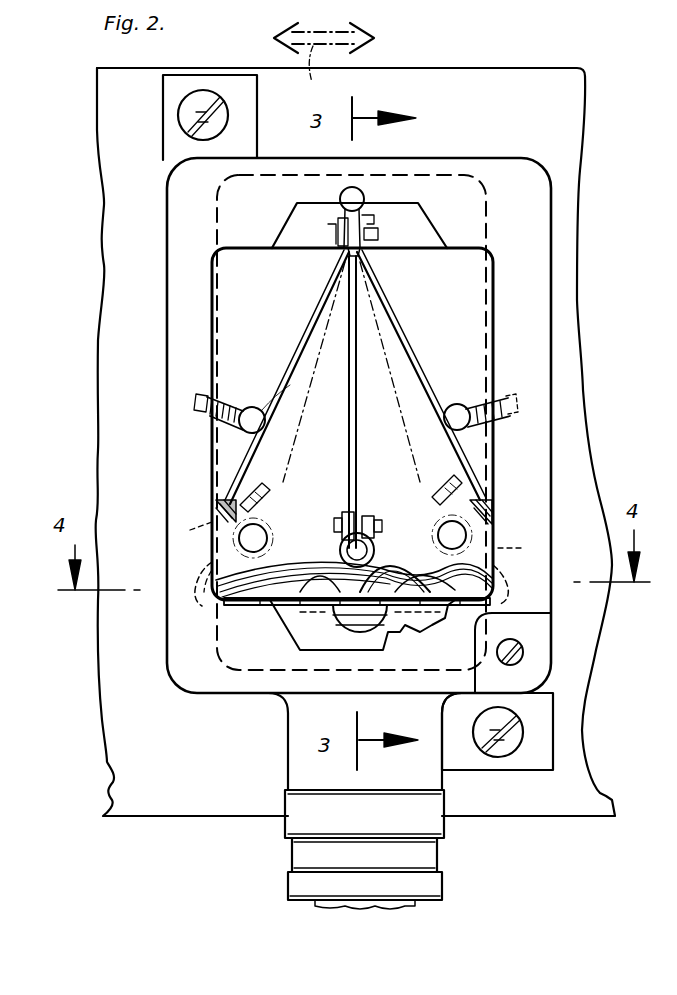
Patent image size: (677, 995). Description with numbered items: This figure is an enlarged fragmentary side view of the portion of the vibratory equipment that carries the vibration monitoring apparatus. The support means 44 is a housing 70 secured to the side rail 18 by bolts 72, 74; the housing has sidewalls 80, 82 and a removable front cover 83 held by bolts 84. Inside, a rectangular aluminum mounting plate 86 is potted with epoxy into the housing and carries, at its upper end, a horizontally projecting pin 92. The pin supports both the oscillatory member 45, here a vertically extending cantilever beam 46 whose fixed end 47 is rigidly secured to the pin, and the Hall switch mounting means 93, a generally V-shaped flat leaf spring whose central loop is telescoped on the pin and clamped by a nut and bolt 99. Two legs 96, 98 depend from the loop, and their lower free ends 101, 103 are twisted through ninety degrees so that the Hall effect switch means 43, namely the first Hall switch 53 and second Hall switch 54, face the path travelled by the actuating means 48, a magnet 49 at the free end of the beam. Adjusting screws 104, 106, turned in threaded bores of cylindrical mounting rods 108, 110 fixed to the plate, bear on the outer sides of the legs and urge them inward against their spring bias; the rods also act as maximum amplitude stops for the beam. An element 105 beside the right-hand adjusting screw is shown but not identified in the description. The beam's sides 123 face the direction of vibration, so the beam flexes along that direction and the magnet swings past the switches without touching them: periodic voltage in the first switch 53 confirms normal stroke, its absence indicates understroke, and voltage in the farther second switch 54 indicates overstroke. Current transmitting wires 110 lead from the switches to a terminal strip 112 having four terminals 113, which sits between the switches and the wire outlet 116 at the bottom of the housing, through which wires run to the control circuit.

The side rail 18 is at (572, 280).
The Hall effect switch means 43 is at (218, 512).
The support means 44 is at (545, 142).
The oscillatory member 45 is at (376, 342).
The cantilever beam 46 is at (353, 462).
The fixed end of cantilever beam 47 is at (382, 216).
The actuating means 48 is at (378, 548).
The magnet 49 is at (273, 540).
The first Hall switch 53 is at (190, 530).
The second Hall switch 54 is at (522, 548).
The housing 70 is at (552, 210).
The bolt 72 is at (178, 108).
The bolt 74 is at (515, 736).
The sidewall 80 is at (552, 392).
The sidewall 82 is at (166, 402).
The front cover 83 is at (545, 606).
The bolt 84 is at (520, 660).
The mounting plate 86 is at (352, 424).
The pin 92 is at (340, 198).
The Hall switch mounting means 93 is at (288, 352).
The leg of leaf spring 96 is at (288, 386).
The leg of leaf spring 98 is at (410, 340).
The nut and bolt 99 is at (374, 254).
The lower free end of leg 101 is at (222, 512).
The lower free end of leg 103 is at (490, 536).
The adjusting screw 104 is at (205, 395).
The right screw 105 is at (478, 388).
The adjusting screw 106 is at (470, 400).
The cylindrical mounting rod 108 is at (265, 406).
The cylindrical mounting rod 110 is at (445, 405).
The terminal strip 112 is at (250, 606).
The terminal 113 is at (300, 614).
The wire outlet 116 is at (445, 818).
The sides of pendulum beam 123 is at (338, 458).